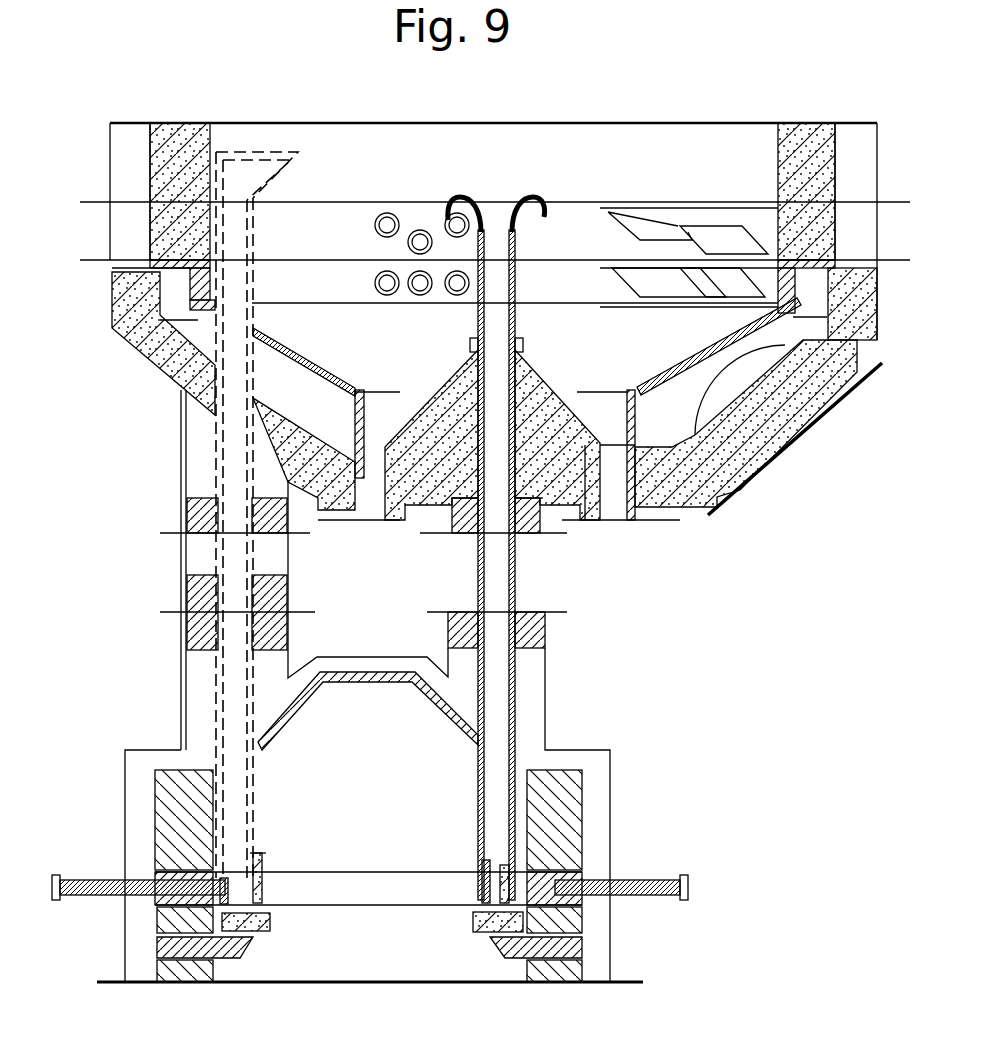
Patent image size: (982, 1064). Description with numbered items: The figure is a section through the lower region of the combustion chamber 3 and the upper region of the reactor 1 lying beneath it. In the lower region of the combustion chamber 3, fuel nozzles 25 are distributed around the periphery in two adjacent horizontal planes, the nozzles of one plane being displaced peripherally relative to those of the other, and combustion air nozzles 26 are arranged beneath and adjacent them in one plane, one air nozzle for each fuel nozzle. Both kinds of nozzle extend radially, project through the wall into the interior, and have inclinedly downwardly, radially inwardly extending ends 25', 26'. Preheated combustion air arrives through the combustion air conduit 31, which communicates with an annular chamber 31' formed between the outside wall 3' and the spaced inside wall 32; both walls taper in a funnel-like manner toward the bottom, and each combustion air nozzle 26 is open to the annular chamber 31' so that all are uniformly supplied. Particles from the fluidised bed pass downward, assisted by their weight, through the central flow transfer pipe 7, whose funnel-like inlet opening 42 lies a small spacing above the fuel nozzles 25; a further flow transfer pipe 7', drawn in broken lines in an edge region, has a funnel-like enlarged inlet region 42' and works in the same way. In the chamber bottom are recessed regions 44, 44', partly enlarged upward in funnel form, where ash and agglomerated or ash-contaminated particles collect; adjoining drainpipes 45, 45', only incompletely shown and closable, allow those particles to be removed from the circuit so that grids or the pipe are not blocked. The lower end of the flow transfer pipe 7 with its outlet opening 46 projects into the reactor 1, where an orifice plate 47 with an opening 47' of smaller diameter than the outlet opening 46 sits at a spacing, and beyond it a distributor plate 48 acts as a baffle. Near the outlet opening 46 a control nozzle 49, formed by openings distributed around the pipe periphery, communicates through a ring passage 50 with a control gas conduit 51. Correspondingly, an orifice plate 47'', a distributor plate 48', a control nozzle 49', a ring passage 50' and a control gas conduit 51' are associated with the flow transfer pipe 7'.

The reactor 1 is at (383, 964).
The combustion chamber 3 is at (495, 211).
The outside wall 3' is at (147, 343).
The flow transfer pipe 7 is at (434, 797).
The flow transfer pipe 7' is at (286, 686).
The fuel nozzles 25 is at (576, 205).
The inclinedly downwardly, radially inwardly extending end 25' is at (650, 202).
The combustion air nozzles 26 is at (568, 310).
The inclinedly downwardly, radially inwardly extending end 26' is at (654, 310).
The combustion air conduit 31 is at (795, 439).
The annular chamber 31' is at (785, 416).
The inside wall 32 is at (274, 352).
The inlet opening 42 is at (496, 525).
The region of the inlet opening 42' is at (257, 479).
The recessed region 44 is at (633, 455).
The recessed region 44' is at (326, 450).
The drainpipe 45 is at (597, 464).
The drainpipe 45' is at (442, 464).
The outlet opening 46 is at (582, 920).
The orifice plate 47 is at (513, 954).
The opening 47' is at (372, 927).
The orifice plate 47'' is at (252, 947).
The distributor plate 48 is at (543, 897).
The distributor plate 48' is at (219, 897).
The control nozzle 49 is at (471, 855).
The control nozzle 49' is at (273, 856).
The ring passage 50 is at (458, 869).
The ring passage 50' is at (307, 869).
The control gas conduit 51 is at (621, 862).
The control gas conduit 51' is at (138, 866).